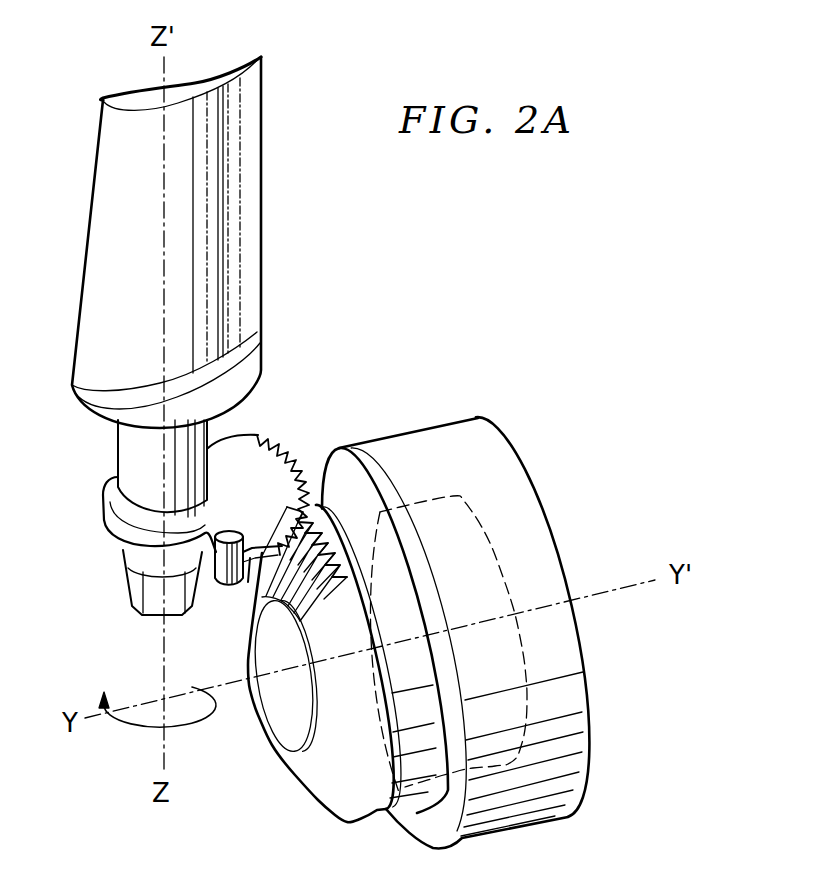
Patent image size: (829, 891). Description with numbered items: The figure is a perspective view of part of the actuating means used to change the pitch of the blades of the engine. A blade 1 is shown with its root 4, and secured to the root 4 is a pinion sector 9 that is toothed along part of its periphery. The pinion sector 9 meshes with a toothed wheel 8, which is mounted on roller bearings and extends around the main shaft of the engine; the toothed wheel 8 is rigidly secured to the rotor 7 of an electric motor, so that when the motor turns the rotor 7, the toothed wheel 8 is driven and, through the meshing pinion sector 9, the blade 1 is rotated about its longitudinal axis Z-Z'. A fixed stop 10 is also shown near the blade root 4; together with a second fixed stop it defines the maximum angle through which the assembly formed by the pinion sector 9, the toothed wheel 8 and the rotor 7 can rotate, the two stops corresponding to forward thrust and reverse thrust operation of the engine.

The blade 1 is at (250, 240).
The root 4 is at (120, 456).
The rotor 7 is at (536, 510).
The toothed wheel 8 is at (330, 797).
The pinion sector 9 is at (265, 432).
The fixed stop 10 is at (232, 576).